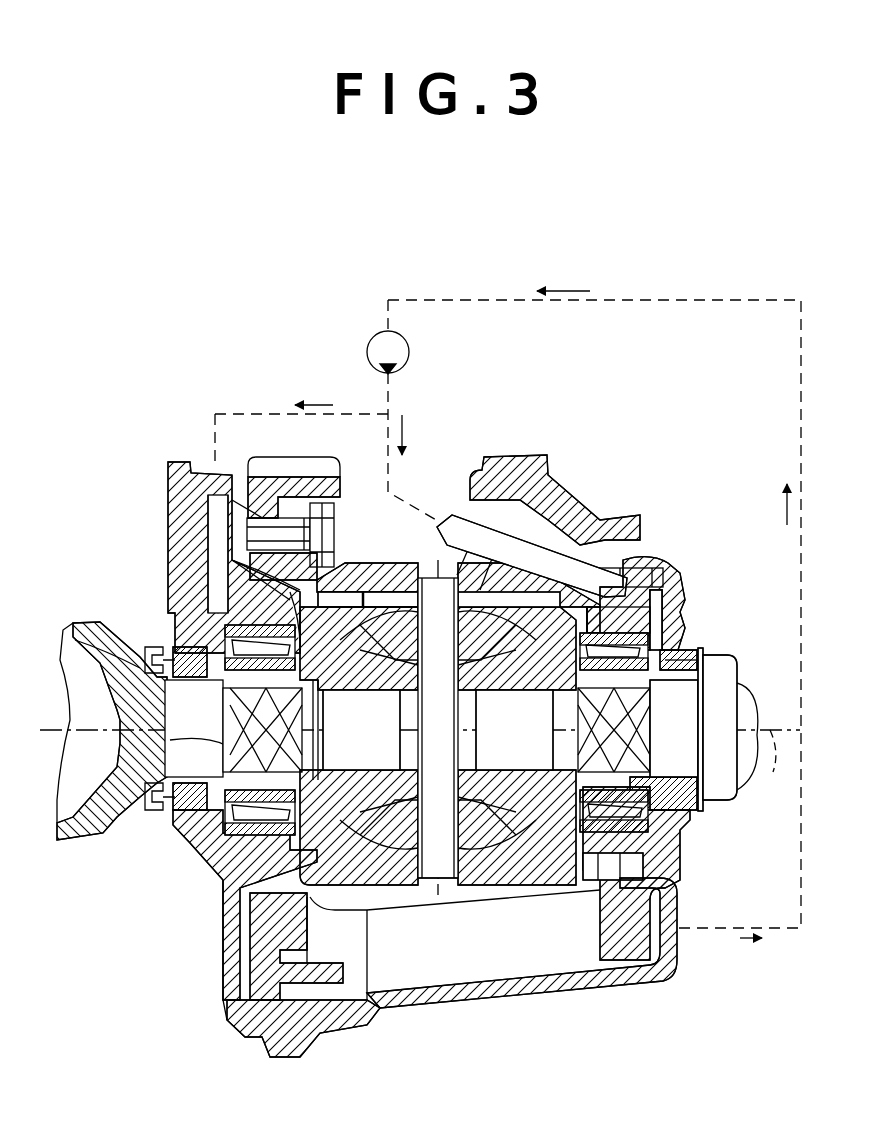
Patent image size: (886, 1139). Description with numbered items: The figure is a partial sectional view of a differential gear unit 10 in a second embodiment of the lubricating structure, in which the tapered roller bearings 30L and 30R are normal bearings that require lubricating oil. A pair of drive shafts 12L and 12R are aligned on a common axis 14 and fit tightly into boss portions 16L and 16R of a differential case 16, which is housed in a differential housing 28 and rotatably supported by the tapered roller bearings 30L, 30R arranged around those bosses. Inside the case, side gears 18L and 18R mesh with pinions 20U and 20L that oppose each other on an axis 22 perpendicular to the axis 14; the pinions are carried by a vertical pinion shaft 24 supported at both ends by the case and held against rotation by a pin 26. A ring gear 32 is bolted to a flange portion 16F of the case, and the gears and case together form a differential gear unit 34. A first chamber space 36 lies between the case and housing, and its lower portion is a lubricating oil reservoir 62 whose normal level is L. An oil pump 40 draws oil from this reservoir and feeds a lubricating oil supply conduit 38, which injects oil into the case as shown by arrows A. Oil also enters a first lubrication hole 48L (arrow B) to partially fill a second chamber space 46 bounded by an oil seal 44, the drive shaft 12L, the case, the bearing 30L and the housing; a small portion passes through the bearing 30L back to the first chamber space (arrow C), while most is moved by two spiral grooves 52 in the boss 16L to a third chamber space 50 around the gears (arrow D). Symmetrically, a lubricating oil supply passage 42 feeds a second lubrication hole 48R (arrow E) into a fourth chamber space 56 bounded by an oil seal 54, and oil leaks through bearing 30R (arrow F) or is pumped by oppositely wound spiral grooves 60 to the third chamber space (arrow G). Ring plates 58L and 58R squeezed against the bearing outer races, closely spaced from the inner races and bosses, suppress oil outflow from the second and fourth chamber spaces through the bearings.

The differential gear unit 10 is at (570, 445).
The drive shaft 12L is at (72, 635).
The drive shaft 12R is at (750, 700).
The axis 14 is at (772, 763).
The differential case 16 is at (405, 893).
The flange portion 16F is at (270, 940).
The boss portion 16L is at (205, 815).
The boss portion 16R is at (690, 825).
The side gear 18L is at (372, 905).
The side gear 18R is at (530, 888).
The pinion 20L is at (480, 880).
The pinion 20U is at (500, 612).
The axis 22 is at (440, 880).
The pinion shaft 24 is at (423, 574).
The pin 26 is at (364, 580).
The differential housing 28 is at (168, 478).
The tapered roller bearing 30L is at (245, 840).
The tapered roller bearing 30R is at (680, 850).
The ring gear 32 is at (300, 472).
The differential gear unit 34 is at (512, 880).
The first chamber space 36 is at (565, 530).
The lubricating oil supply conduit 38 is at (208, 525).
The oil pump 40 is at (410, 352).
The lubricating oil supply passage 42 is at (680, 582).
The oil seal 44 is at (160, 812).
The second chamber space 46 is at (162, 650).
The first lubrication hole 48L is at (200, 640).
The second lubrication hole 48R is at (675, 612).
The third chamber space 50 is at (370, 592).
The spiral grooves 52 is at (218, 703).
The oil seal 54 is at (705, 805).
The fourth chamber space 56 is at (688, 655).
The ring plate 58L is at (212, 848).
The ring plate 58R is at (680, 645).
The spiral grooves 60 is at (700, 742).
The lubricating oil reservoir 62 is at (598, 967).
The arrows A is at (440, 574).
The arrow B is at (210, 562).
The arrow C is at (337, 948).
The arrow D is at (207, 753).
The arrow E is at (615, 630).
The arrow F is at (620, 888).
The arrow G is at (665, 753).
The normal level of lubricating oil L is at (585, 898).